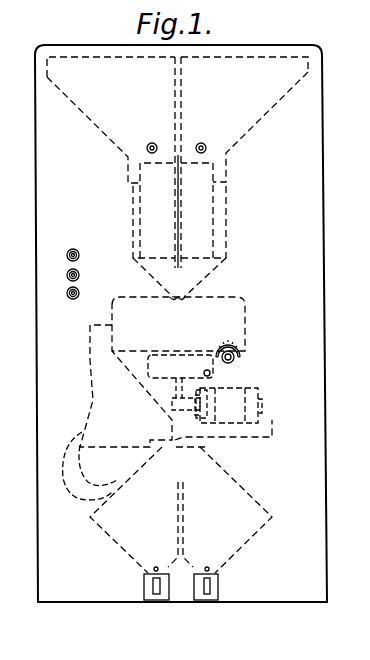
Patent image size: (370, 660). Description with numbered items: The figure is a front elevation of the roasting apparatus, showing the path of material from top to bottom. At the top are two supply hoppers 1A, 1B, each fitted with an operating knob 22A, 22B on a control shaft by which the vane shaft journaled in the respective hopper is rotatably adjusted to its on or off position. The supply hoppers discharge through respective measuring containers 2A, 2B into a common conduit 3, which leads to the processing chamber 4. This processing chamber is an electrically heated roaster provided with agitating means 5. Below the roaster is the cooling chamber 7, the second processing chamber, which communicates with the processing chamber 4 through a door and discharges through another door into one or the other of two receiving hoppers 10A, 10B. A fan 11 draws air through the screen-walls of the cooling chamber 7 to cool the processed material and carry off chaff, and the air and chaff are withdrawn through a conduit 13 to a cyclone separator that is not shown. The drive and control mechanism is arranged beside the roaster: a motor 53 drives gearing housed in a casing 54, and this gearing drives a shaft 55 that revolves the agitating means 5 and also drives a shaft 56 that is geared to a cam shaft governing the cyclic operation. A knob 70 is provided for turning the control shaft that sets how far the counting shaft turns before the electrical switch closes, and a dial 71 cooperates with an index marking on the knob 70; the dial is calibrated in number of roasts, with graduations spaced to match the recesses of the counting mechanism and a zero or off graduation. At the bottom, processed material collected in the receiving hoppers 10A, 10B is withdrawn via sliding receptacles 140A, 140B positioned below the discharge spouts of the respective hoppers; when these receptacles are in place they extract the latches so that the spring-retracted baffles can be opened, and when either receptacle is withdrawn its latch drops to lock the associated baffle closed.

The supply hopper 1A is at (98, 113).
The supply hopper 1B is at (265, 98).
The operating knob 22A is at (152, 143).
The operating knob 22B is at (203, 143).
The common conduit 3 is at (160, 157).
The measuring container 2A is at (153, 202).
The measuring container 2B is at (203, 208).
The agitating means 5 is at (197, 265).
The cooling chamber 7 is at (117, 383).
The shaft 55 is at (175, 375).
The shaft 56 is at (205, 371).
The casing 54 is at (170, 400).
The knob 70 is at (242, 358).
The dial 71 is at (232, 343).
The processing chamber 4 is at (240, 334).
The motor 53 is at (233, 393).
The conduit 13 is at (268, 428).
The fan 11 is at (82, 478).
The receiving hopper 10A is at (125, 517).
The receiving hopper 10B is at (243, 515).
The sliding receptacle 140A is at (140, 588).
The sliding receptacle 140B is at (215, 588).